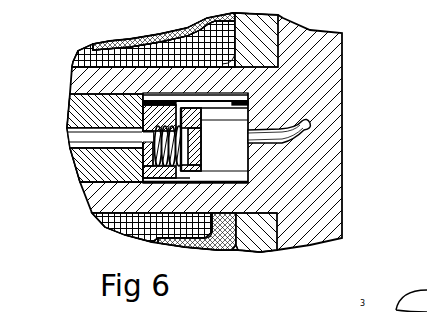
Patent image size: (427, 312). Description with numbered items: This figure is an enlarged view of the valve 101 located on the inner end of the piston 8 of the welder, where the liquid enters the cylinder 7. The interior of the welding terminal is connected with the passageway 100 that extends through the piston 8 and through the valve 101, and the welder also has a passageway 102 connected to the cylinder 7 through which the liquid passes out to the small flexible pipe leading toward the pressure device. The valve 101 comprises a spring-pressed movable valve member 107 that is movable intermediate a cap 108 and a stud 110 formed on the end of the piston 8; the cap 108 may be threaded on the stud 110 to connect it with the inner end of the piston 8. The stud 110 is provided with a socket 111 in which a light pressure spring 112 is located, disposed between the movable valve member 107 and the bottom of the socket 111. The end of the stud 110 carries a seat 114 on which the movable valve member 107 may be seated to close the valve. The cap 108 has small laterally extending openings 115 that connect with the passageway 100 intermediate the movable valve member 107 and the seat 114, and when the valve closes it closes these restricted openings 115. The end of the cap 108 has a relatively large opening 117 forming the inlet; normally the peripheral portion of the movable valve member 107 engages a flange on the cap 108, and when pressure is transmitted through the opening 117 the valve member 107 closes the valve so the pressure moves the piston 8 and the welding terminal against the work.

The cylinder 7 is at (90, 194).
The piston 8 is at (80, 163).
The passageway 100 is at (88, 147).
The valve 101 is at (213, 170).
The passageway 102 is at (313, 134).
The movable valve member 107 is at (200, 140).
The cap 108 is at (240, 100).
The stud 110 is at (163, 128).
The socket 111 is at (103, 215).
The light pressure spring 112 is at (72, 93).
The seat 114 is at (188, 128).
The laterally extending openings 115 is at (180, 183).
The opening 117 is at (201, 120).